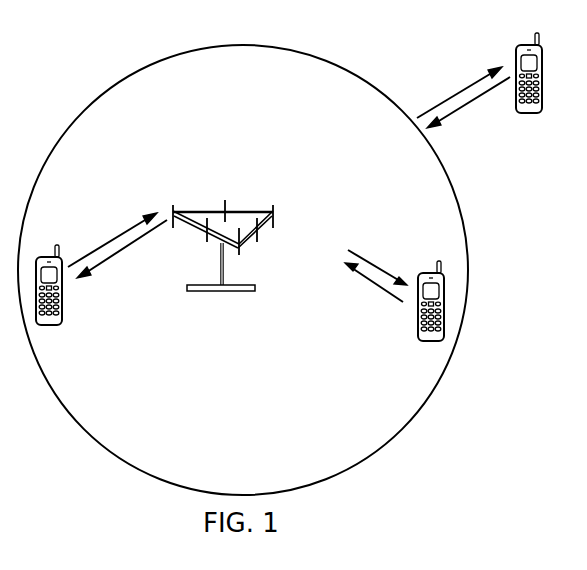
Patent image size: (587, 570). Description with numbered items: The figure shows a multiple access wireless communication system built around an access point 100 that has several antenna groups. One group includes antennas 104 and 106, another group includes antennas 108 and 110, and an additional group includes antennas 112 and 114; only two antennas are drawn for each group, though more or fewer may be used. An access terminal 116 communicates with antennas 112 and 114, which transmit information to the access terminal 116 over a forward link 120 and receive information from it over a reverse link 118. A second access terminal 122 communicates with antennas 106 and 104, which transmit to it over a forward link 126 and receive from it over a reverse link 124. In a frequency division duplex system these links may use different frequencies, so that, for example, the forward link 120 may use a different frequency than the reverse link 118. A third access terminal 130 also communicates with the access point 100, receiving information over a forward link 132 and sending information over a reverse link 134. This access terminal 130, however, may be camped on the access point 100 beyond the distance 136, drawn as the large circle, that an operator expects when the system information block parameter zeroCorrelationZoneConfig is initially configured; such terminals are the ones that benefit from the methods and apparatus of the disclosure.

The access point 100 is at (207, 292).
The antenna 104 is at (240, 252).
The antenna 106 is at (258, 237).
The antenna 108 is at (276, 218).
The antenna 110 is at (226, 203).
The antenna 112 is at (172, 209).
The antenna 114 is at (207, 238).
The access terminal 116 is at (50, 328).
The reverse link 118 is at (120, 235).
The forward link 120 is at (110, 263).
The access terminal 122 is at (430, 345).
The reverse link 124 is at (382, 288).
The forward link 126 is at (378, 265).
The access terminal 130 is at (528, 43).
The forward link 132 is at (465, 86).
The reverse link 134 is at (460, 113).
The distance 136 is at (90, 102).